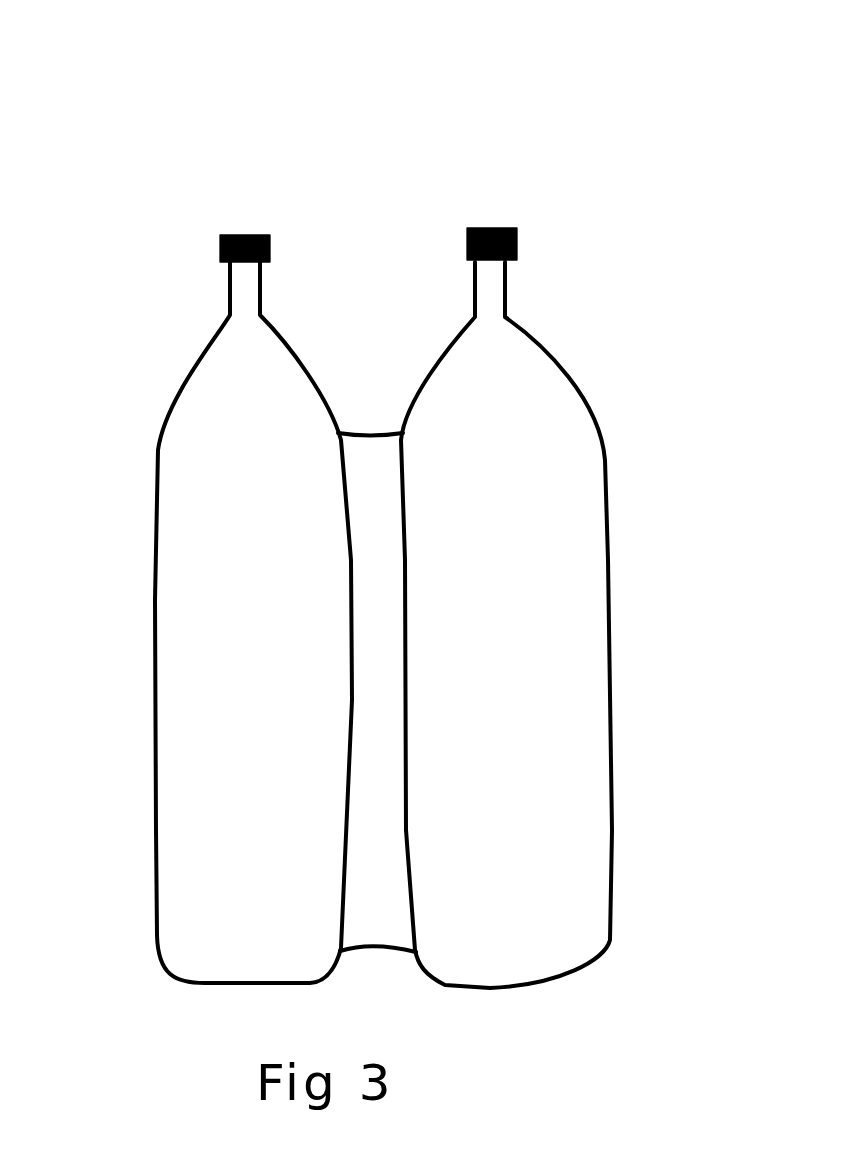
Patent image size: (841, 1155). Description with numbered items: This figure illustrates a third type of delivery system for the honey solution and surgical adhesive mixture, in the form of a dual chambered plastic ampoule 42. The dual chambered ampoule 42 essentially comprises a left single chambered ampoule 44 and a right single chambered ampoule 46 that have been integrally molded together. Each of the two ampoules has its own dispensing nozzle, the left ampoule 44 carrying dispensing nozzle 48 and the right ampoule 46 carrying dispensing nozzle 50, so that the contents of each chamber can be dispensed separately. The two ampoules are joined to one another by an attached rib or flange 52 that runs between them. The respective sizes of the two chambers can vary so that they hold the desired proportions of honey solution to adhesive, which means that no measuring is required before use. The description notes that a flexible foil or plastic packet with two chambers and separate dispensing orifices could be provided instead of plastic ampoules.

The dual chambered ampoule 42 is at (172, 138).
The left single chambered ampoule 44 is at (195, 572).
The right single chambered ampoule 46 is at (582, 600).
The dispensing nozzle 48 is at (233, 288).
The dispensing nozzle 50 is at (495, 285).
The attached rib or flange 52 is at (372, 467).